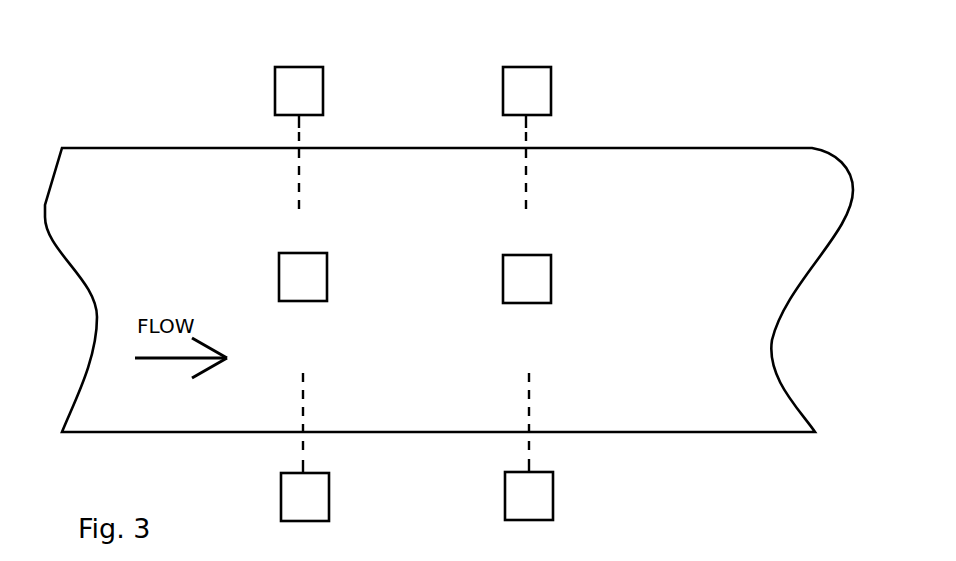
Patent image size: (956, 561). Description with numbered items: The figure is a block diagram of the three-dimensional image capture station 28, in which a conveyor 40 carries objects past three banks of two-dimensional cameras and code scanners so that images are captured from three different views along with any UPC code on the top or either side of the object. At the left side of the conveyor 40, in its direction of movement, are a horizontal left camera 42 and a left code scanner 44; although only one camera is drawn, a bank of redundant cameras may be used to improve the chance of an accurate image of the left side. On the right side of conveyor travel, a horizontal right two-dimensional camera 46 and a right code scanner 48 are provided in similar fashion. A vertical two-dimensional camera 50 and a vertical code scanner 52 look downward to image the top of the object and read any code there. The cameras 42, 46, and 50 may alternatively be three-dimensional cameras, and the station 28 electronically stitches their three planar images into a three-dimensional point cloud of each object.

The three-dimensional image capture station 28 is at (824, 73).
The conveyor 40 is at (212, 146).
The horizontal left camera 42 is at (313, 67).
The left code scanner 44 is at (549, 67).
The horizontal right 2D camera 46 is at (323, 492).
The right code scanner 48 is at (553, 497).
The vertical 2D camera 50 is at (322, 253).
The vertical code scanner 52 is at (546, 255).